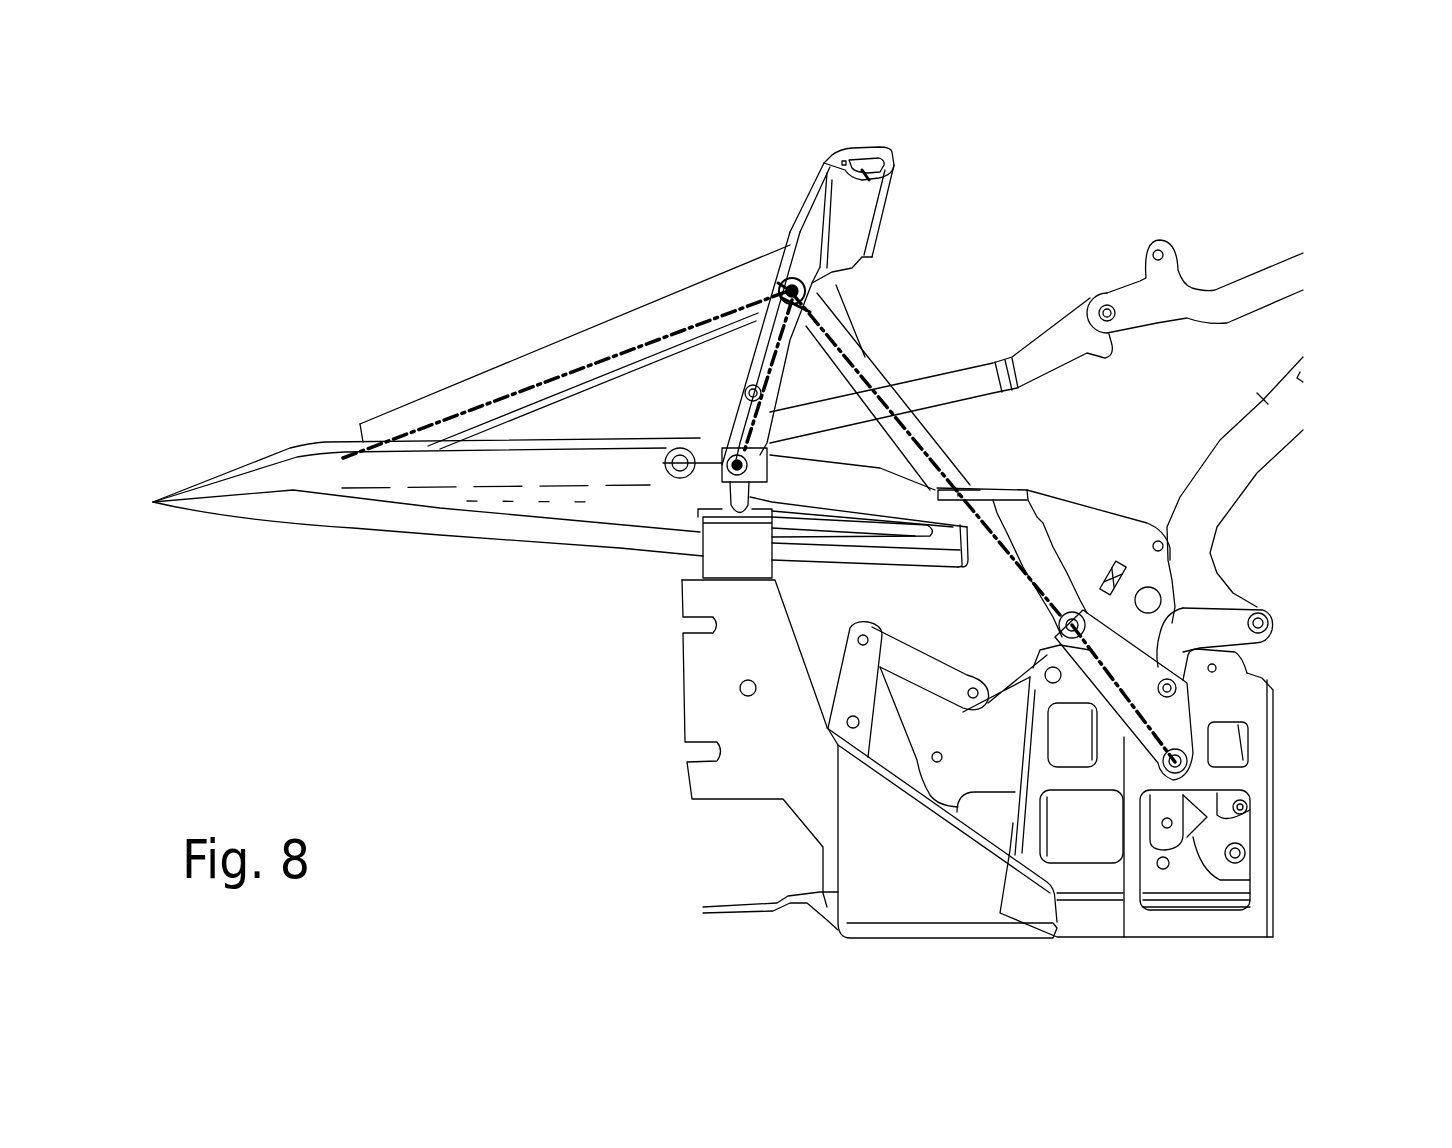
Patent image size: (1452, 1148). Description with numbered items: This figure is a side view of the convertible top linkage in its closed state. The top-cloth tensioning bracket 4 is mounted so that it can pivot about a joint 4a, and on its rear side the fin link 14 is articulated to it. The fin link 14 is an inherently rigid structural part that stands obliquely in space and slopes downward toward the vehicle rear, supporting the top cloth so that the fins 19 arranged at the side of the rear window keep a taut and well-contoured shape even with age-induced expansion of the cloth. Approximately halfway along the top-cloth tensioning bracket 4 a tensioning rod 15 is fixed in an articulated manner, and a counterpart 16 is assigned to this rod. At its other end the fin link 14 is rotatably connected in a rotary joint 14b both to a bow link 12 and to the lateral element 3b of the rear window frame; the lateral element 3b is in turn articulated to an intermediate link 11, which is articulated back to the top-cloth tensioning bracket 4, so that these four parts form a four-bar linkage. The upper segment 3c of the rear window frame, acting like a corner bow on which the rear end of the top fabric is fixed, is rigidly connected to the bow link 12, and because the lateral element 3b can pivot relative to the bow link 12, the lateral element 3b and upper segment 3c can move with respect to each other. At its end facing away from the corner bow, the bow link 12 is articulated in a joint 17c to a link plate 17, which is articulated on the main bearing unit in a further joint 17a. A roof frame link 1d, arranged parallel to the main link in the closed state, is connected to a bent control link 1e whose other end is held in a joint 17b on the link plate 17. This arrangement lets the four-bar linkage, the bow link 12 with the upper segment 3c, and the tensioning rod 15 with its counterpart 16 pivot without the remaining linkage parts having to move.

The roof frame link 1d is at (1235, 482).
The bent control link 1e is at (1225, 623).
The lateral element of the rear window frame 3b is at (760, 343).
The upper segment of the rear window frame 3c is at (894, 155).
The top-cloth tensioning bracket 4 is at (303, 508).
The joint 4a is at (1150, 603).
The intermediate link 11 is at (712, 470).
The bow link 12 is at (863, 357).
The fin link 14 is at (467, 388).
The rotary joint 14b is at (790, 285).
The tensioning rod 15 is at (1063, 332).
The counterpart 16 is at (1173, 290).
The link plate 17 is at (1173, 725).
The joint 17a is at (1178, 762).
The joint 17b is at (1185, 685).
The joint 17c is at (1078, 620).
The fins 19 is at (416, 597).